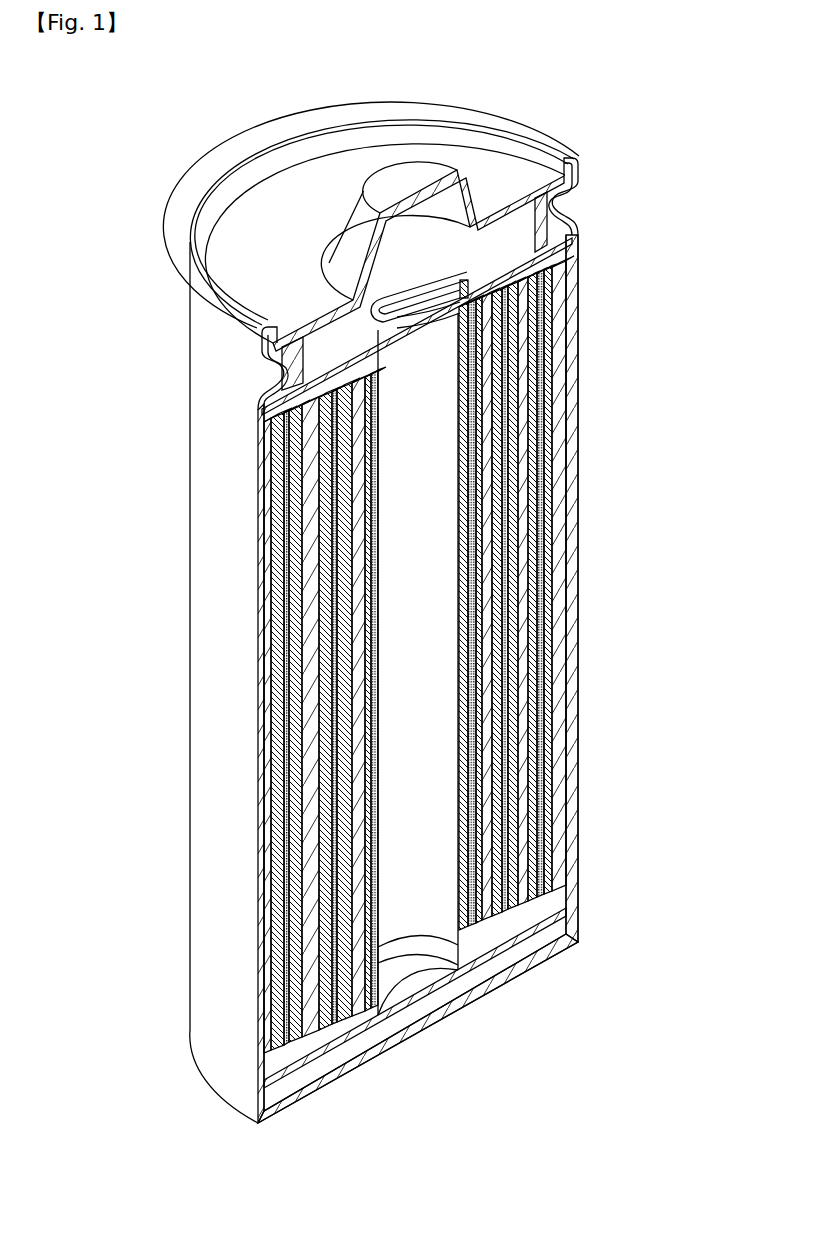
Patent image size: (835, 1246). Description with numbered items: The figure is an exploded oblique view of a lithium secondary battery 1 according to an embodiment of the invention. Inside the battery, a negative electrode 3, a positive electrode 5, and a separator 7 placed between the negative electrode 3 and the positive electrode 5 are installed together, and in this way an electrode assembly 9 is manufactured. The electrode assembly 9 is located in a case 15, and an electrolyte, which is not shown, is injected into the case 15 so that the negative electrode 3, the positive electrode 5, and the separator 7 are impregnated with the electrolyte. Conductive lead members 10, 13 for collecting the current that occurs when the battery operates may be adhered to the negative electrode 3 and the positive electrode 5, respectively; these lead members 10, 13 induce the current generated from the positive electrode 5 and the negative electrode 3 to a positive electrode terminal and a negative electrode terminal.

The lithium secondary battery 1 is at (259, 144).
The negative electrode 3 is at (570, 518).
The positive electrode 5 is at (648, 525).
The separator 7 is at (558, 465).
The electrode assembly 9 is at (469, 654).
The lead member 10 is at (558, 258).
The lead member 13 is at (538, 908).
The case 15 is at (576, 670).